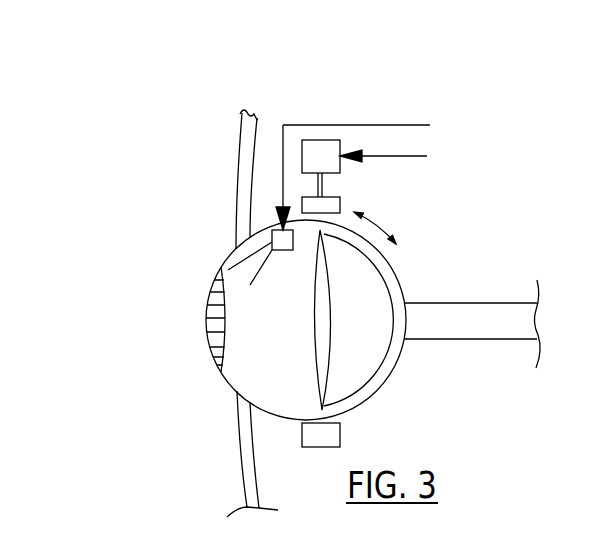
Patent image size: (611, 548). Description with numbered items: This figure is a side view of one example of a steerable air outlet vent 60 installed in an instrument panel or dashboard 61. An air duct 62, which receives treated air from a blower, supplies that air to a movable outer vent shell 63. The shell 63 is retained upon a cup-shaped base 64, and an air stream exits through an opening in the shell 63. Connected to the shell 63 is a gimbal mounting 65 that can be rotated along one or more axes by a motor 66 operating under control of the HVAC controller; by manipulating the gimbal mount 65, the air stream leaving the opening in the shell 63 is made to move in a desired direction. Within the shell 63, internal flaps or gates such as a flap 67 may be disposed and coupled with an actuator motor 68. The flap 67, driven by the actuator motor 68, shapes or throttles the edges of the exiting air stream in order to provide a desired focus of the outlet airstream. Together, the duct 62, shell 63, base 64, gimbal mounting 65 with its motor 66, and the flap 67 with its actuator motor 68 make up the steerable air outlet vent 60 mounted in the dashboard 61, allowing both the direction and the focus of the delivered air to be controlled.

The steerable air outlet vent 60 is at (192, 448).
The instrument panel or dashboard 61 is at (240, 186).
The air duct 62 is at (450, 303).
The movable outer vent shell 63 is at (233, 372).
The cup-shaped base 64 is at (370, 338).
The gimbal mounting 65 is at (340, 205).
The motor 66 is at (340, 163).
The flap 67 is at (250, 267).
The actuator motor 68 is at (283, 250).